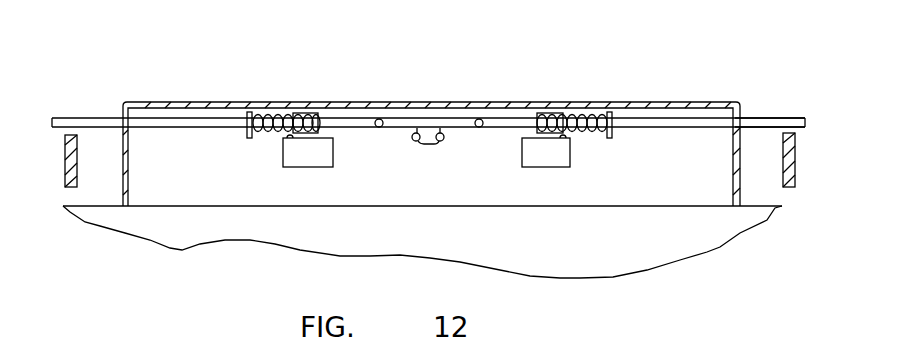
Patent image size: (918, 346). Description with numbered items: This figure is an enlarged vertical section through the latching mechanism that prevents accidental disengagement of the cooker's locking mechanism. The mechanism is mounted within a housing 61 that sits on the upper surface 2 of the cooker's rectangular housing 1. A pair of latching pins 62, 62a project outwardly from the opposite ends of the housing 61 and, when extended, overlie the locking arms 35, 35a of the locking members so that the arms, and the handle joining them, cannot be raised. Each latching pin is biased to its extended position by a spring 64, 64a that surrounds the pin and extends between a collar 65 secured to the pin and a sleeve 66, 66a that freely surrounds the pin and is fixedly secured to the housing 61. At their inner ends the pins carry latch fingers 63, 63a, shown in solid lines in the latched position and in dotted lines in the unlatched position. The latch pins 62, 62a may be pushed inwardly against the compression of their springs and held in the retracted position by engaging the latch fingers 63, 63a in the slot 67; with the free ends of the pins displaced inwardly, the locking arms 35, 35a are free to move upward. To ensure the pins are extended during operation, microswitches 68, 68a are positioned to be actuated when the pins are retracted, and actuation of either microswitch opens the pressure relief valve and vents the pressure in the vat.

The housing 1 is at (680, 243).
The upper surface 2 is at (650, 206).
The locking arm 35 is at (65, 184).
The locking arm 35a is at (797, 158).
The housing 61 is at (410, 102).
The latching pin 62 is at (70, 117).
The latching pin 62a is at (775, 117).
The latch finger 63 is at (378, 128).
The latch finger 63a is at (480, 128).
The spring 64 is at (268, 114).
The spring 64a is at (585, 118).
The collar 65 is at (250, 137).
The sleeve 66 is at (318, 118).
The sleeve 66a is at (545, 114).
The slot 67 is at (442, 145).
The microswitch 68 is at (298, 165).
The microswitch 68a is at (548, 162).